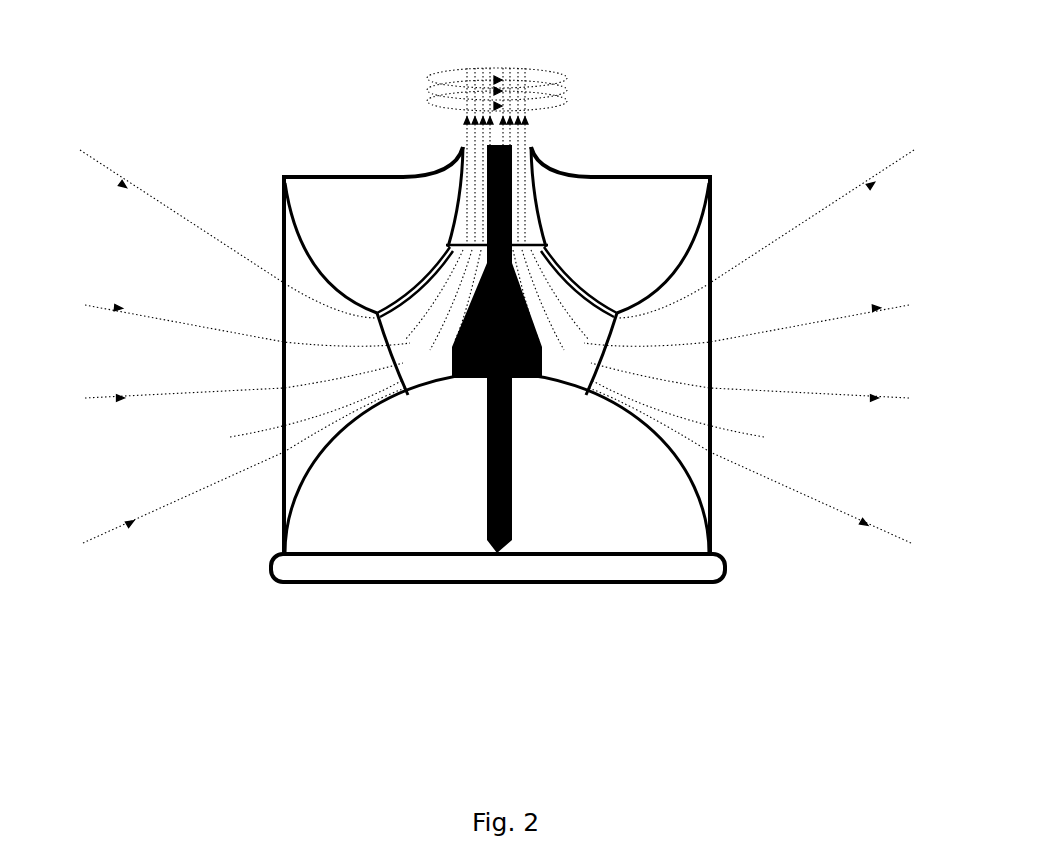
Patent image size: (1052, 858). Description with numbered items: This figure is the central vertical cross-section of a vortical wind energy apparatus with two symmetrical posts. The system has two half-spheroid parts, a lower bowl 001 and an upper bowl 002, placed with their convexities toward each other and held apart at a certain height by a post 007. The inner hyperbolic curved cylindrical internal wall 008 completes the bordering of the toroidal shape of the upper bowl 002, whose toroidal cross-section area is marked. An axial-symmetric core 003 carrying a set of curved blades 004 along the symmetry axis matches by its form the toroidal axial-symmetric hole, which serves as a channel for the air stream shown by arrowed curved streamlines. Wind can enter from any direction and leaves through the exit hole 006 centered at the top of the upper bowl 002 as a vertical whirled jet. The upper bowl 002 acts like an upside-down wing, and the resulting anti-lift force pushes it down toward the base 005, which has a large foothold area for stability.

The lower bowl 001 is at (560, 478).
The upper bowl 002 is at (588, 210).
The core 003 is at (408, 375).
The curved blades 004 is at (617, 318).
The base 005 is at (330, 570).
The exit hole 006 is at (515, 147).
The post 007 is at (605, 352).
The internal wall 008 is at (452, 213).